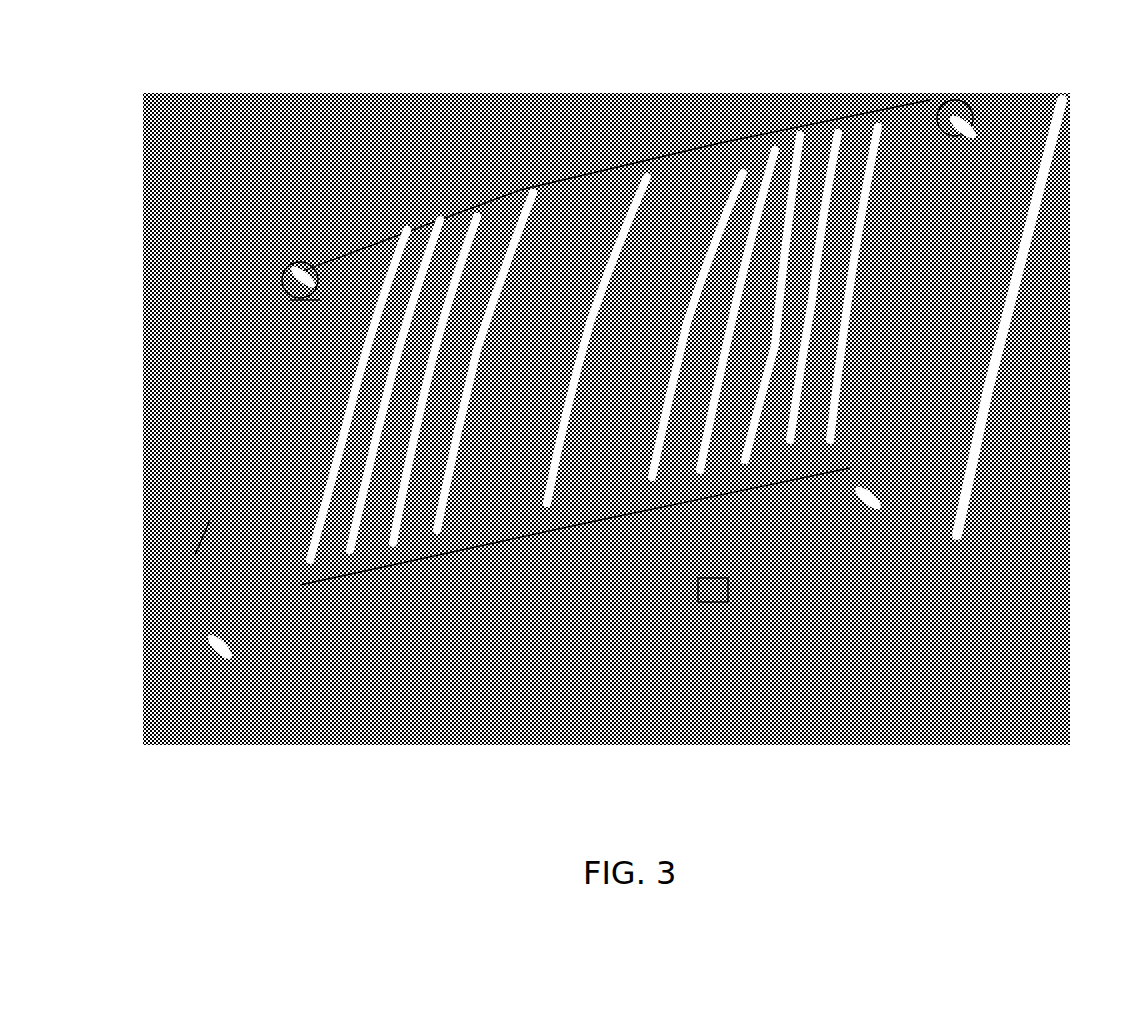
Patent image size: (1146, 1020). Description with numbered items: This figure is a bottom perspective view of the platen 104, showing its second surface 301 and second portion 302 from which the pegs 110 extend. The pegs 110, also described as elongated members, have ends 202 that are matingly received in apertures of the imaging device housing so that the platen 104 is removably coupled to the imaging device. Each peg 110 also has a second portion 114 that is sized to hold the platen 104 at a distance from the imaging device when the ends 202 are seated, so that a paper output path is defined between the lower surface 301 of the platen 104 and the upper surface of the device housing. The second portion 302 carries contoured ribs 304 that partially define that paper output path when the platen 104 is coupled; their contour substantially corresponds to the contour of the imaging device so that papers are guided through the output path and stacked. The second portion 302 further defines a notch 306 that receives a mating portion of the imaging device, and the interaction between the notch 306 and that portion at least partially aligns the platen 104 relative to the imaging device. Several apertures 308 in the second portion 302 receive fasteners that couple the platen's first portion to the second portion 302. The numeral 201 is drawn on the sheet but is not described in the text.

The platen 104 is at (538, 116).
The pegs 110 is at (939, 88).
The upper frame member 201 is at (712, 152).
The ends 202 is at (287, 262).
The second portions 114 is at (302, 280).
The apertures 308 is at (300, 320).
The second surface 301 is at (195, 552).
The second portion 302 is at (965, 400).
The contoured ribs 304 is at (532, 552).
The notch 306 is at (722, 603).